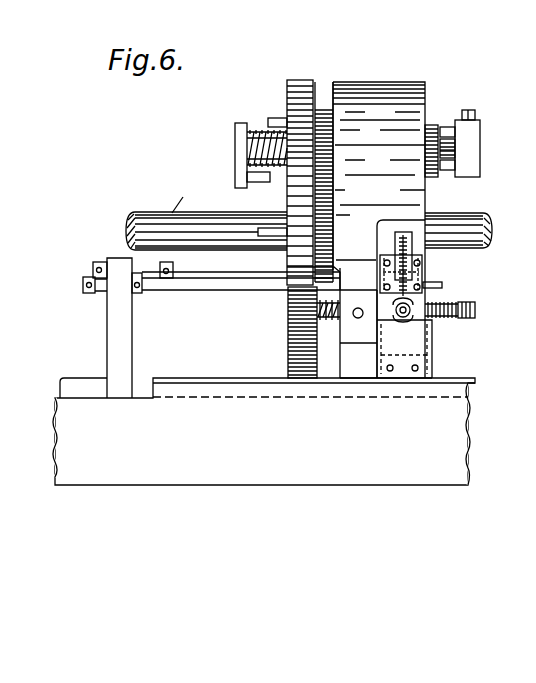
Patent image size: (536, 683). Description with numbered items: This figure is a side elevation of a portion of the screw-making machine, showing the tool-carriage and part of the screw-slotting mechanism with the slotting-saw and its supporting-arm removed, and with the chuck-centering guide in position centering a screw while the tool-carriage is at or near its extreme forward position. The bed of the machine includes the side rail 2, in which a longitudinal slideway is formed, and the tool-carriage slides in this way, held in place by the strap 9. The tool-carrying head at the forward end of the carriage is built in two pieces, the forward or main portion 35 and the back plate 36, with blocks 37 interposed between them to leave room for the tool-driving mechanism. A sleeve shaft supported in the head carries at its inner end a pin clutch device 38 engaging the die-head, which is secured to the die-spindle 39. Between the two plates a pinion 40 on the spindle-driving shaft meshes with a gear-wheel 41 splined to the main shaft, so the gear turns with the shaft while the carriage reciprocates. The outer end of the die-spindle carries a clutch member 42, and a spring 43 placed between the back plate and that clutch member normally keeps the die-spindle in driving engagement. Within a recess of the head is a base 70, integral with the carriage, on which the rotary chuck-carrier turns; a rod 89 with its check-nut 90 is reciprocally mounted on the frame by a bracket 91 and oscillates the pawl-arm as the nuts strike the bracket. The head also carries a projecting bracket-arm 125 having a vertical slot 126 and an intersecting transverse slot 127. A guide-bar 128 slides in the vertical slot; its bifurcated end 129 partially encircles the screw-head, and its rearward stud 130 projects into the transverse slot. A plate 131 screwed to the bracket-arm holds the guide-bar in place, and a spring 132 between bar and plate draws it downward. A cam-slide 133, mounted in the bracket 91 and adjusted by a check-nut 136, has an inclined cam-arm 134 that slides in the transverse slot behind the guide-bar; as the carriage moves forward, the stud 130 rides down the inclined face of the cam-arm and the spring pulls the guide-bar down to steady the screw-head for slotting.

The side rail 2 is at (147, 475).
The strap 9 is at (227, 382).
The forward or main portion of the tool-carriage head 35 is at (407, 90).
The back plate 36 is at (288, 87).
The blocks 37 is at (323, 87).
The pull-off or pin clutch device 38 is at (432, 127).
The die-spindle 39 is at (457, 155).
The pinion 40 is at (327, 147).
The gear-wheel 41 is at (322, 247).
The clutch member 42 is at (237, 177).
The spring 43 is at (255, 137).
The base 70 is at (357, 362).
The rod 89 is at (228, 278).
The check-nut 90 is at (98, 263).
The bracket 91 is at (132, 328).
The bracket-arm 125 is at (393, 228).
The vertical slot 126 is at (403, 248).
The transverse recess or slot 127 is at (442, 285).
The guide-bar 128 is at (420, 297).
The bifurcated end 129 is at (425, 320).
The stud or pin 130 is at (410, 277).
The plate 131 is at (377, 298).
The spring 132 is at (482, 236).
The cam-slide 133 is at (238, 290).
The inclined cam-arm 134 is at (355, 283).
The check-nut 136 is at (92, 295).